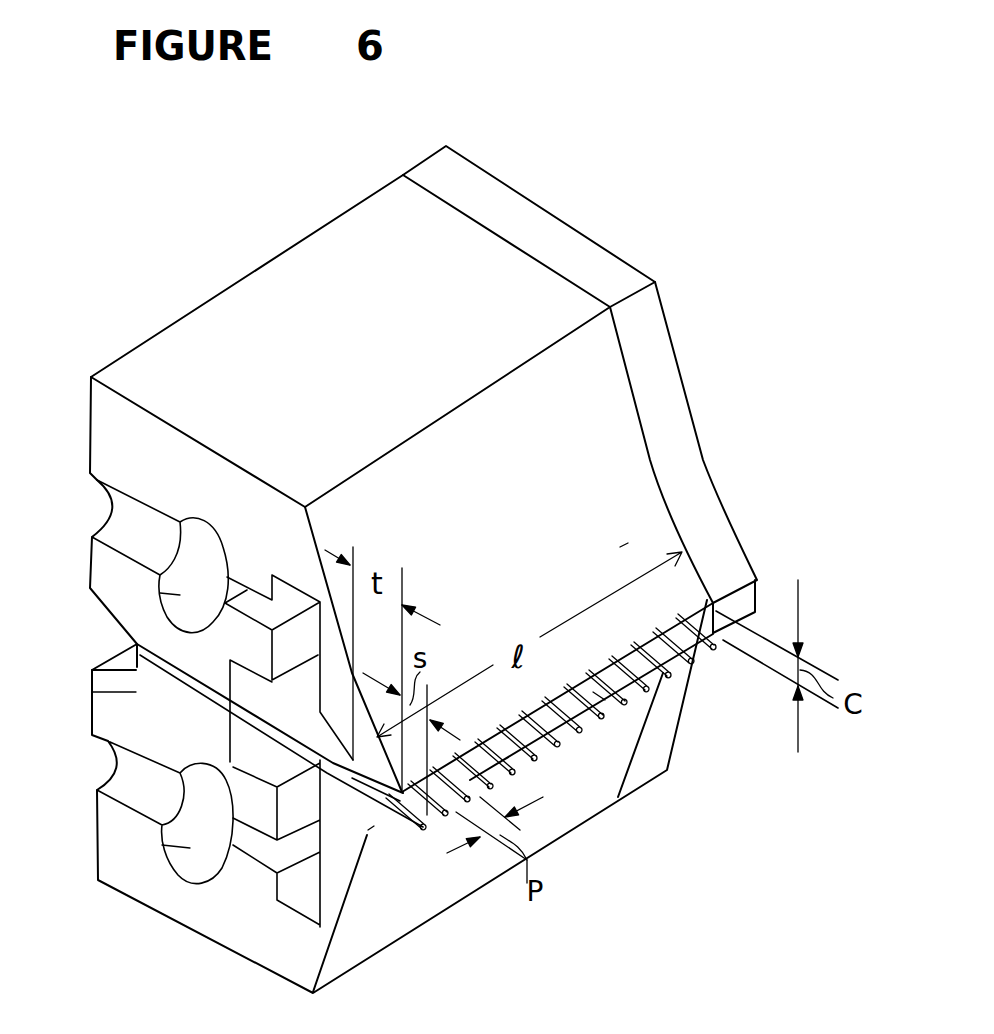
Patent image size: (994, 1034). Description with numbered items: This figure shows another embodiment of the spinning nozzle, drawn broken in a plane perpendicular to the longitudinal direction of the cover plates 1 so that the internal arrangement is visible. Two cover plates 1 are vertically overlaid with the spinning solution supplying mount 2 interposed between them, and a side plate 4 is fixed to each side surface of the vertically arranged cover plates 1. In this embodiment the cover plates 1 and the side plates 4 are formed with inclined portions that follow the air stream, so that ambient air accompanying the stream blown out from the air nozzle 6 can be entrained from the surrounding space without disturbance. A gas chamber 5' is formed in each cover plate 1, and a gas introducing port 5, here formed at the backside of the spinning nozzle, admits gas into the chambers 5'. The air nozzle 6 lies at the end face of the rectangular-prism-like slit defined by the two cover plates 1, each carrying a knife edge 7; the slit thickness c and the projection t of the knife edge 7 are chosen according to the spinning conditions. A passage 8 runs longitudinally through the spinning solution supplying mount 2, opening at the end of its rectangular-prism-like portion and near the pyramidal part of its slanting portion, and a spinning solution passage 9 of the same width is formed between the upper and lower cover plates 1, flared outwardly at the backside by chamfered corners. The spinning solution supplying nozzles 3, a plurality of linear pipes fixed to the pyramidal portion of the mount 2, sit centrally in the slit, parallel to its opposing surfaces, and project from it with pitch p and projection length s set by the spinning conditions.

The cover plate 1 is at (193, 373).
The spinning solution supplying mount 2 is at (250, 752).
The spinning solution supplying nozzles 3 is at (555, 740).
The side plate 4 is at (653, 360).
The gas introducing port 5 is at (63, 606).
The gas chamber 5' is at (108, 708).
The air nozzle 6 is at (605, 700).
The knife edge 7 is at (620, 547).
The passage 8 is at (297, 742).
The spinning solution passage 9 is at (163, 670).